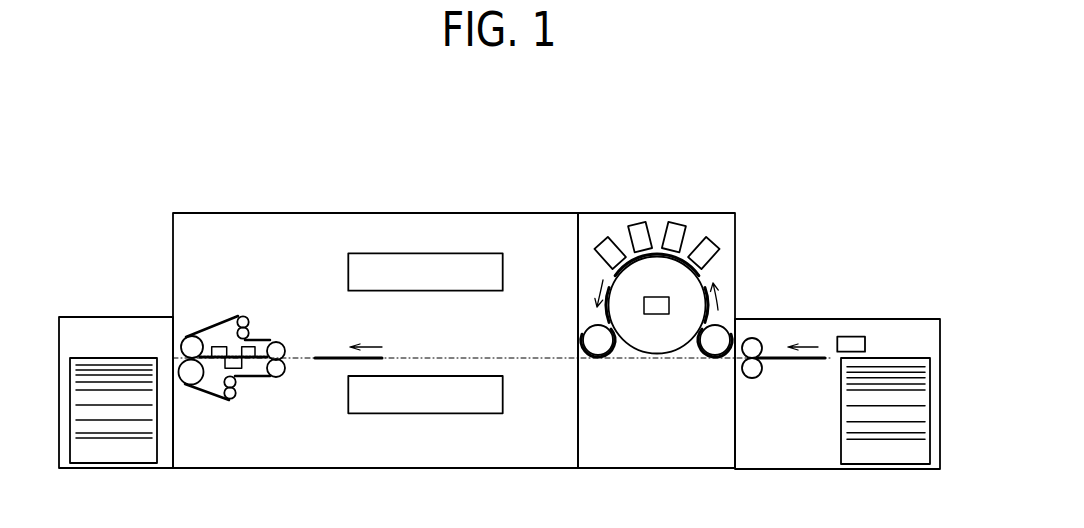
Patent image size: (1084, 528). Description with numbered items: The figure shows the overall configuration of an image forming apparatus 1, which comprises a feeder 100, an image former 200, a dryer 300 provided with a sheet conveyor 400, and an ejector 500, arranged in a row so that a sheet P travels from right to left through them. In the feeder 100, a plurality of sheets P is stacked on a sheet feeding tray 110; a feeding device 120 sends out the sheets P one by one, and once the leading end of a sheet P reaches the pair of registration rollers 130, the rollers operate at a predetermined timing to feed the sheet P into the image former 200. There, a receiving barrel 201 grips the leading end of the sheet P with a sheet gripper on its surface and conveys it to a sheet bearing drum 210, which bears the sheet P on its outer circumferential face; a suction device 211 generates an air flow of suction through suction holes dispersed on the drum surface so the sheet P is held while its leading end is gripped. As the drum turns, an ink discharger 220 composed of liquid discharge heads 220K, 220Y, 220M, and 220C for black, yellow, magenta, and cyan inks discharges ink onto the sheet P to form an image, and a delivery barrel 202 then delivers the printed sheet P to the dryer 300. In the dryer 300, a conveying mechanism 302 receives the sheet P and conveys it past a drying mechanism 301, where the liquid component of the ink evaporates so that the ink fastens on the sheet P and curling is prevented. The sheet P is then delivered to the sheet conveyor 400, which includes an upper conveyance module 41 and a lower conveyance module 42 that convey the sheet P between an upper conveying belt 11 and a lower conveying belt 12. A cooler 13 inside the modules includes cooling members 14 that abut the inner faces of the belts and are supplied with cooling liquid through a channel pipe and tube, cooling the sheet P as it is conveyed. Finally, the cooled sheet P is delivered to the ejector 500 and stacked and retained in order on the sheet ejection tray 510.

The image forming apparatus 1 is at (800, 150).
The feeder 100 is at (879, 309).
The sheet feeding tray 110 is at (910, 357).
The feeding device 120 is at (848, 337).
The pair of registration rollers 130 is at (762, 328).
The image former 200 is at (741, 217).
The receiving barrel 201 is at (722, 320).
The delivery barrel 202 is at (590, 325).
The sheet bearing drum 210 is at (682, 354).
The suction device 211 is at (650, 315).
The ink discharger 220 is at (753, 131).
The liquid discharge head 220K is at (606, 246).
The liquid discharge head 220Y is at (639, 222).
The liquid discharge head 220M is at (680, 222).
The liquid discharge head 220C is at (715, 238).
The dryer 300 is at (337, 206).
The drying mechanism 301 is at (435, 253).
The conveying mechanism 302 is at (438, 415).
The sheet conveyor 400 is at (232, 273).
The upper conveying belt 11 is at (207, 325).
The lower conveying belt 12 is at (213, 395).
The cooler 13 is at (217, 379).
The cooling member 14 is at (247, 347).
The upper conveyance module 41 is at (274, 298).
The lower conveyance module 42 is at (243, 406).
The ejector 500 is at (132, 310).
The sheet ejection tray 510 is at (100, 357).
The sheet P is at (338, 355).